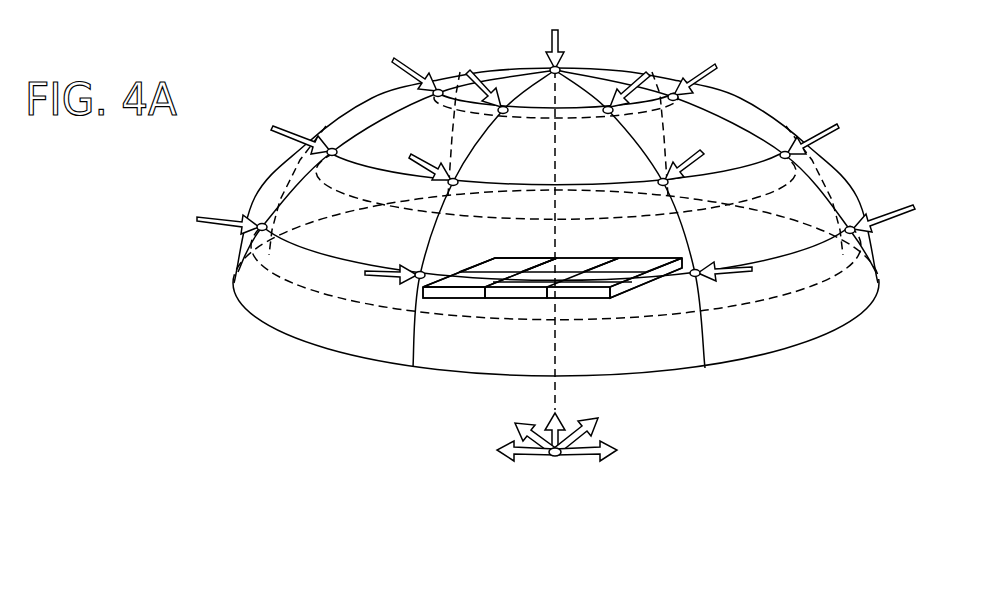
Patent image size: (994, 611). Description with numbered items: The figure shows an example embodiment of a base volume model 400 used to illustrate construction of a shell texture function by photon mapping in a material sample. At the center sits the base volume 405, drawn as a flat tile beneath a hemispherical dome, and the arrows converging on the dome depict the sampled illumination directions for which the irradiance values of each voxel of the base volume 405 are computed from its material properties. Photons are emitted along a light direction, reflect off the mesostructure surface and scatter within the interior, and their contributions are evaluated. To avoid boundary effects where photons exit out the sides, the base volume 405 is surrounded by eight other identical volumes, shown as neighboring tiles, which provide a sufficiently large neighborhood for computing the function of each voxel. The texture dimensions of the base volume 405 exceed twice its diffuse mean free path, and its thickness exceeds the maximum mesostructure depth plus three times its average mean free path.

The base volume model 400 is at (275, 24).
The base volume 405 is at (552, 310).